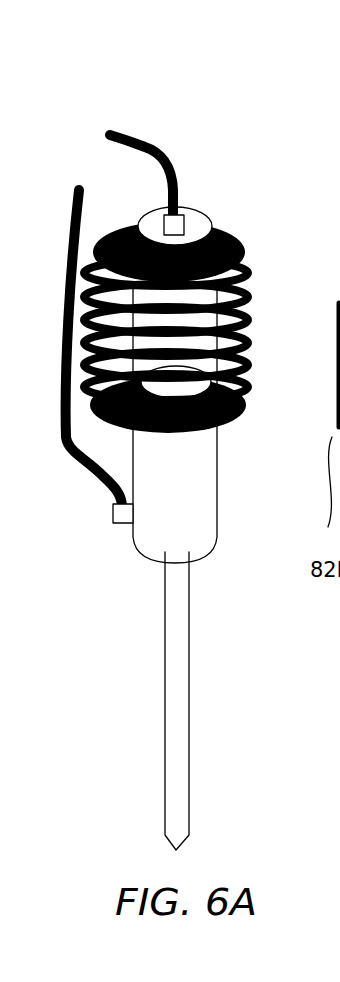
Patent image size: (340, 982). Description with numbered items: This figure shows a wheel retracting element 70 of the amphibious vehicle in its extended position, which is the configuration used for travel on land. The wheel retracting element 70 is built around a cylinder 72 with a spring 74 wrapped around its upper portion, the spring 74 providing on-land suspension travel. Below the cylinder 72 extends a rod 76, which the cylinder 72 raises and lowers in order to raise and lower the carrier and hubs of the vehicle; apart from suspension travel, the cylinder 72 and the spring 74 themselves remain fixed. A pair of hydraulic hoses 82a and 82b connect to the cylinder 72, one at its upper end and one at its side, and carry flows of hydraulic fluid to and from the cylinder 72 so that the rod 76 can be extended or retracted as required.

The wheel retracting element 70 is at (193, 464).
The cylinder 72 is at (187, 497).
The spring 74 is at (246, 303).
The rod 76 is at (174, 632).
The hydraulic hose 82a is at (175, 167).
The hydraulic hose 82b is at (72, 455).